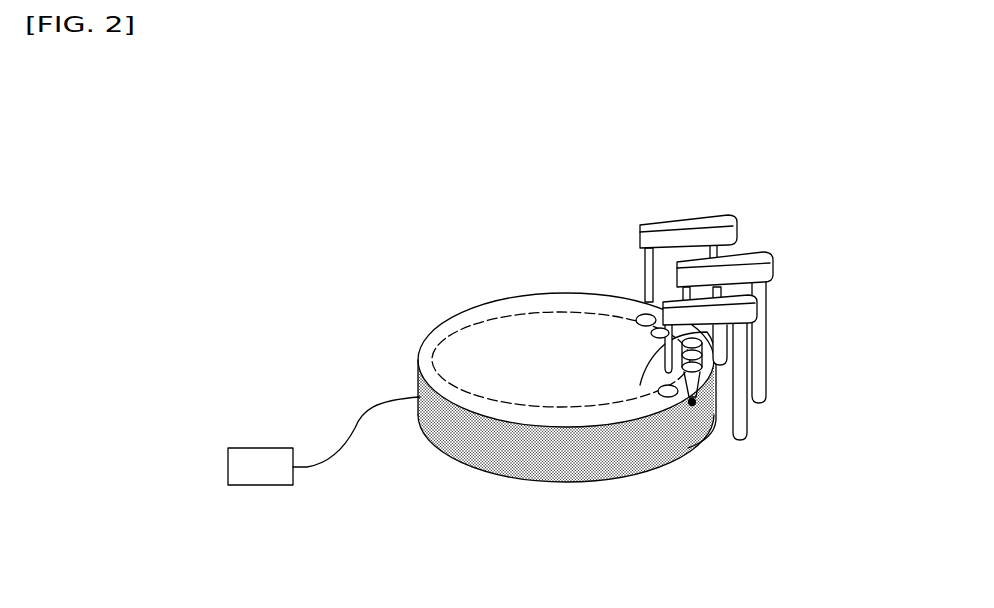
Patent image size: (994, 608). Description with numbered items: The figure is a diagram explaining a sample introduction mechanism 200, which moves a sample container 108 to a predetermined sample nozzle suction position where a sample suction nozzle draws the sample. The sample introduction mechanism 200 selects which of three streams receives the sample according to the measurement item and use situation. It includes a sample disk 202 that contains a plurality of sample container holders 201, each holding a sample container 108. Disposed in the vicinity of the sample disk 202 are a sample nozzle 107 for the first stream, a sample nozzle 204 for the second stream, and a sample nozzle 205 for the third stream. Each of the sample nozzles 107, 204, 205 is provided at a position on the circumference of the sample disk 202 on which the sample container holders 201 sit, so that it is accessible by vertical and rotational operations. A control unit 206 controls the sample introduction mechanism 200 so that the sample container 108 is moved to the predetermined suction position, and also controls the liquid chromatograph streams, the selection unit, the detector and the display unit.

The sample introduction mechanism 200 is at (500, 148).
The sample container holder 201 is at (636, 318).
The sample disk 202 is at (518, 413).
The sample nozzle for stream 2 204 is at (757, 270).
The sample nozzle for stream 3 205 is at (733, 215).
The sample nozzle for stream 1 107 is at (713, 313).
The sample container 108 is at (647, 381).
The control unit 206 is at (256, 448).